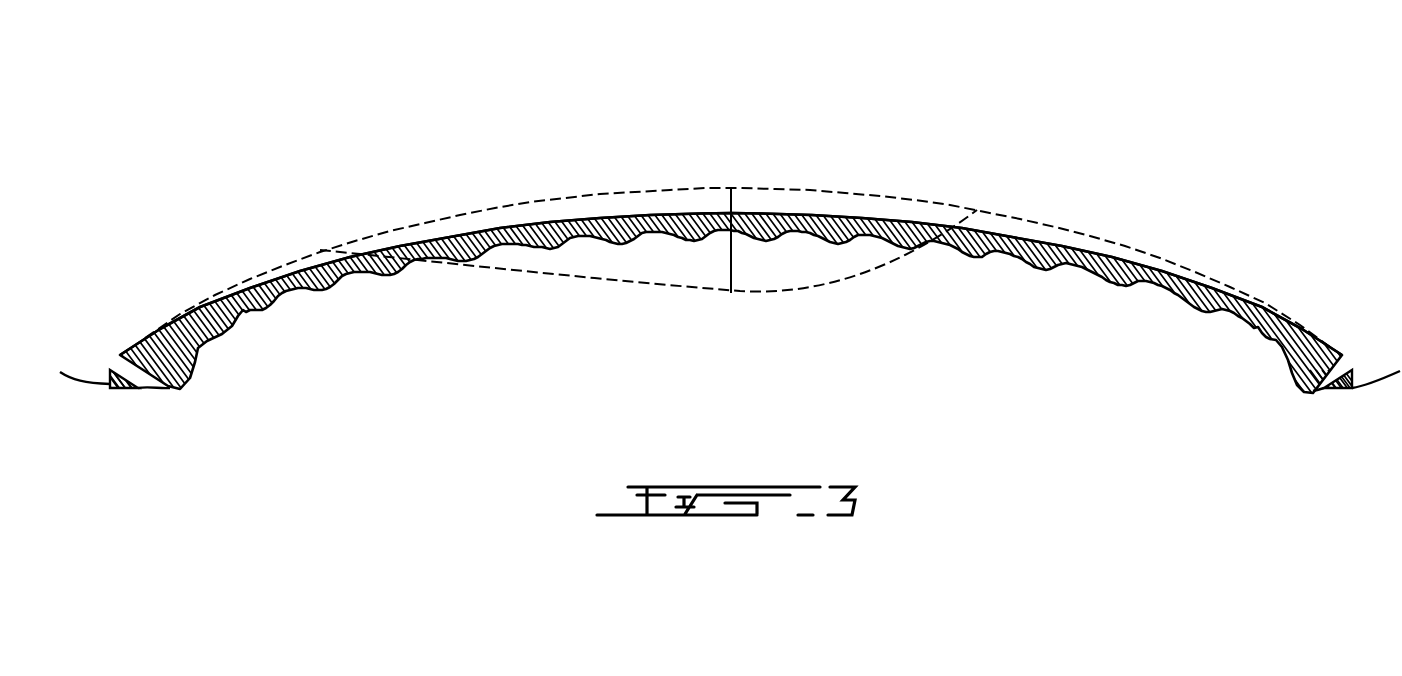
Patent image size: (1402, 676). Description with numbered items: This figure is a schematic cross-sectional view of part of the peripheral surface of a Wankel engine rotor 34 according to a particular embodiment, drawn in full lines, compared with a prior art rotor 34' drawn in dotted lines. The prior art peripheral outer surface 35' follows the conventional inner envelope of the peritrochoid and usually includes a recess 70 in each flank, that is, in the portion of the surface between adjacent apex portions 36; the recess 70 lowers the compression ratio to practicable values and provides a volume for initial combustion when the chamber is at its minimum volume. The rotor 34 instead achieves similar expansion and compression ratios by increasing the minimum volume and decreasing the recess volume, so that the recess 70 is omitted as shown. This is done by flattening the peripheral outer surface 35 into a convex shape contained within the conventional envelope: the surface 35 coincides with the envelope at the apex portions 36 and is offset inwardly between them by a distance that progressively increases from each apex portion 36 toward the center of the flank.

The rotor 34 is at (701, 222).
The prior art rotor 34' is at (737, 200).
The peripheral outer surface 35 is at (731, 214).
The peripheral outer surface of prior art rotor 35' is at (682, 190).
The recess 70 is at (618, 262).
The apex portions 36 is at (106, 361).